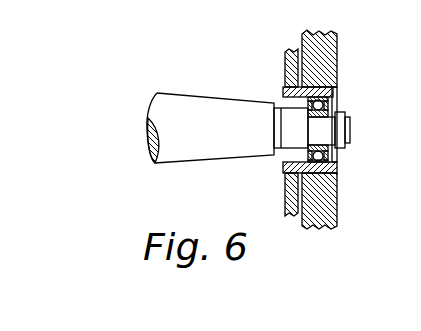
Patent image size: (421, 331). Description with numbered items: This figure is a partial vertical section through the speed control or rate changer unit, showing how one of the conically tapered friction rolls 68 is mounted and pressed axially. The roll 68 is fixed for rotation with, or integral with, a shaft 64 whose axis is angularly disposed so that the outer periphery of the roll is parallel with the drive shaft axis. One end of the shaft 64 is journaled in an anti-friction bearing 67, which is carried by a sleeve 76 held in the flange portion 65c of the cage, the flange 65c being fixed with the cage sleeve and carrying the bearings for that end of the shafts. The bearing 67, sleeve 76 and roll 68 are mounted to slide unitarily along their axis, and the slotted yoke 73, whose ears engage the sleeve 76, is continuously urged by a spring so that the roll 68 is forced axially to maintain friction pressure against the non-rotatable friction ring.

The flange portion 65c is at (313, 45).
The yoke 73 is at (285, 56).
The sleeve 76 is at (285, 174).
The anti-friction bearing 67 is at (338, 98).
The shaft 64 is at (320, 133).
The conically tapered friction roll 68 is at (198, 142).